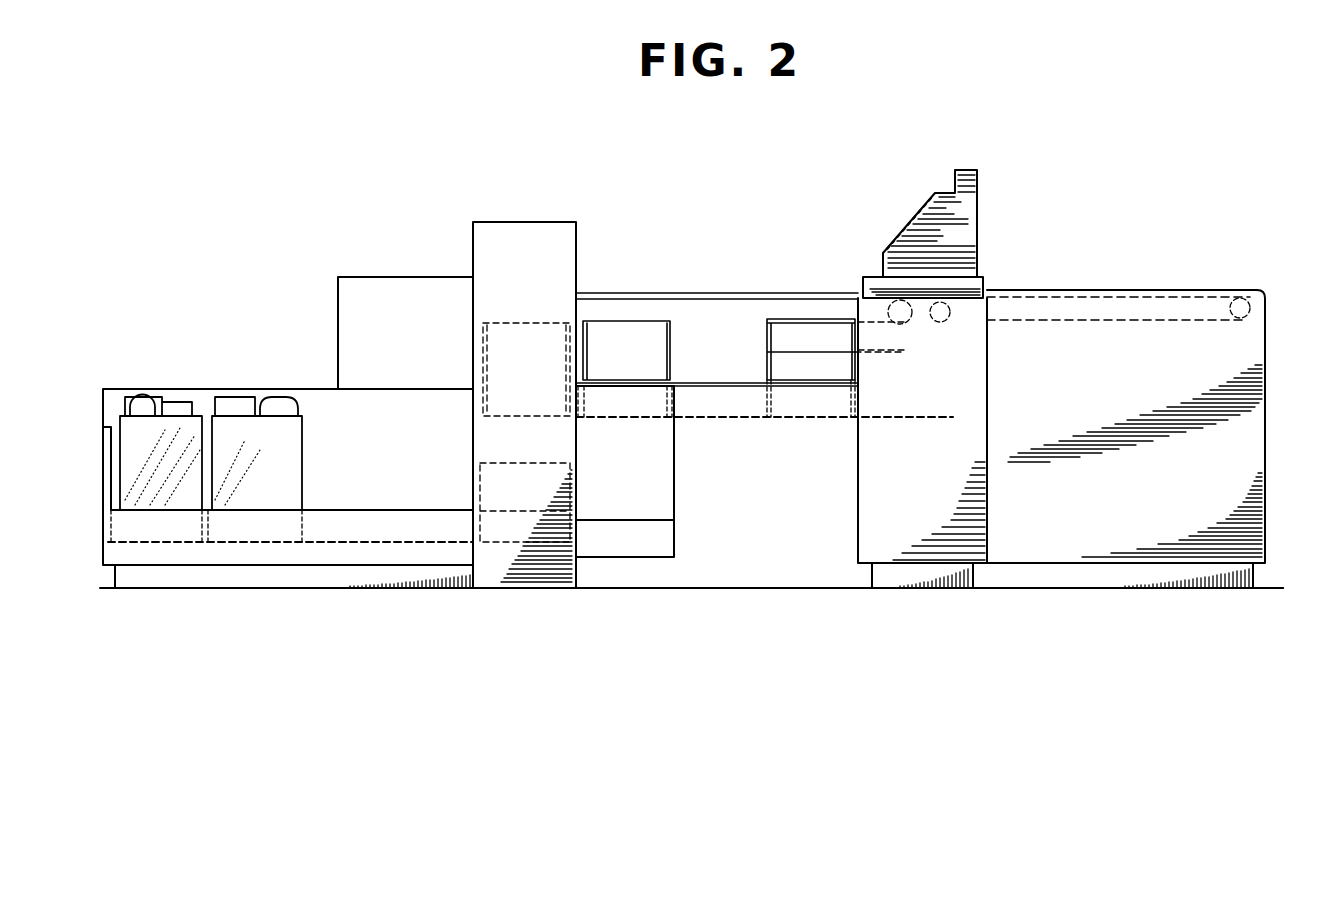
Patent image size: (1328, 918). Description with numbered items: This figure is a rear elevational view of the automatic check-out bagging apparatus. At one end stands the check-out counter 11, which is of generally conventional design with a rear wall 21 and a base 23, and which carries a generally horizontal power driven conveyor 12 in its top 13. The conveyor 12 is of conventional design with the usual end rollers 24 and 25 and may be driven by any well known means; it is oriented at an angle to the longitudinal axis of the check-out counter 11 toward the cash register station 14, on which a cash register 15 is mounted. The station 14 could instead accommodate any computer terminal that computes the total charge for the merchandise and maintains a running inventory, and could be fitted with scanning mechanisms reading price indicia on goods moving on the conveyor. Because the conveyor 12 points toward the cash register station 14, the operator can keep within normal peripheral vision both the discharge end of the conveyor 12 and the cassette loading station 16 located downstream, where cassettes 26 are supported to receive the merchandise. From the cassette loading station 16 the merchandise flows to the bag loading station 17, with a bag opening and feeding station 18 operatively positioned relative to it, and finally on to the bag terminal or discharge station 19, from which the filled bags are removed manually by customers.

The check-out counter 11 is at (1250, 347).
The power driven conveyor 12 is at (1095, 292).
The top 13 is at (1188, 290).
The cash register station 14 is at (988, 292).
The cash register 15 is at (962, 226).
The cassette loading station 16 is at (729, 333).
The bag loading station 17 is at (536, 242).
The bag opening and feeding station 18 is at (651, 499).
The bag terminal or discharge station 19 is at (291, 556).
The rear wall 21 is at (1214, 470).
The base 23 is at (1235, 574).
The end roller 24 is at (1252, 306).
The end roller 25 is at (938, 322).
The cassette 26 is at (805, 316).